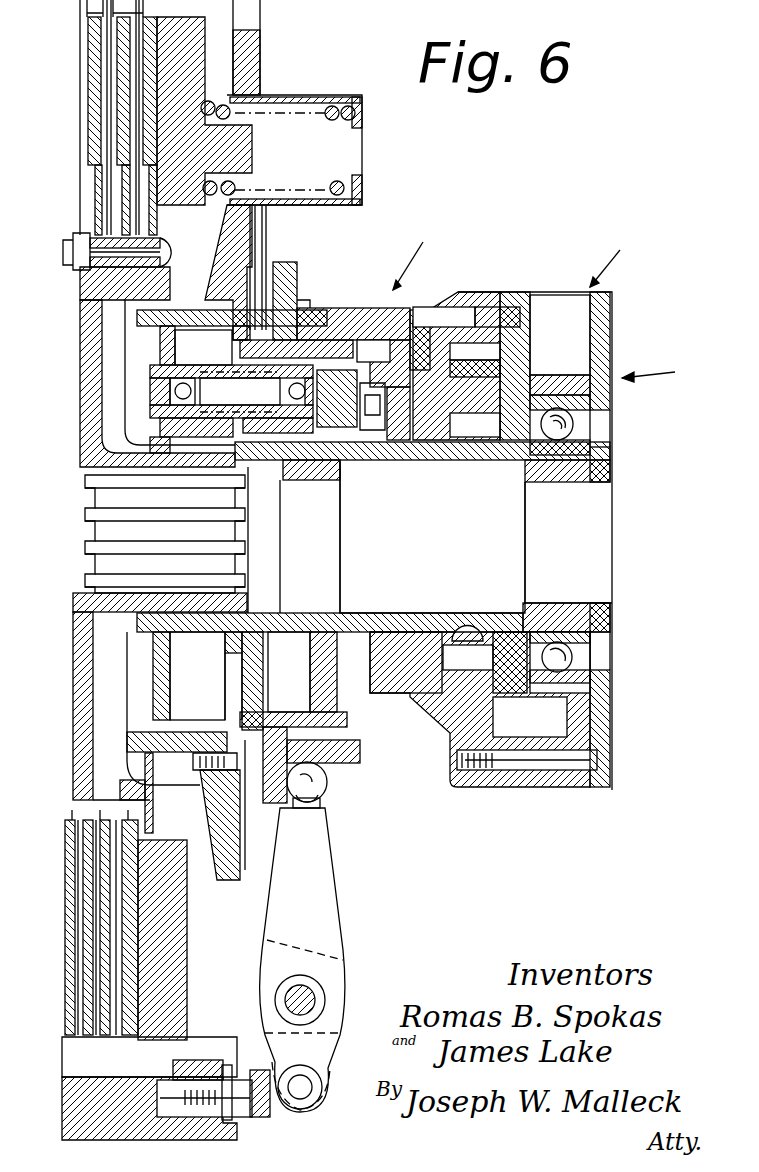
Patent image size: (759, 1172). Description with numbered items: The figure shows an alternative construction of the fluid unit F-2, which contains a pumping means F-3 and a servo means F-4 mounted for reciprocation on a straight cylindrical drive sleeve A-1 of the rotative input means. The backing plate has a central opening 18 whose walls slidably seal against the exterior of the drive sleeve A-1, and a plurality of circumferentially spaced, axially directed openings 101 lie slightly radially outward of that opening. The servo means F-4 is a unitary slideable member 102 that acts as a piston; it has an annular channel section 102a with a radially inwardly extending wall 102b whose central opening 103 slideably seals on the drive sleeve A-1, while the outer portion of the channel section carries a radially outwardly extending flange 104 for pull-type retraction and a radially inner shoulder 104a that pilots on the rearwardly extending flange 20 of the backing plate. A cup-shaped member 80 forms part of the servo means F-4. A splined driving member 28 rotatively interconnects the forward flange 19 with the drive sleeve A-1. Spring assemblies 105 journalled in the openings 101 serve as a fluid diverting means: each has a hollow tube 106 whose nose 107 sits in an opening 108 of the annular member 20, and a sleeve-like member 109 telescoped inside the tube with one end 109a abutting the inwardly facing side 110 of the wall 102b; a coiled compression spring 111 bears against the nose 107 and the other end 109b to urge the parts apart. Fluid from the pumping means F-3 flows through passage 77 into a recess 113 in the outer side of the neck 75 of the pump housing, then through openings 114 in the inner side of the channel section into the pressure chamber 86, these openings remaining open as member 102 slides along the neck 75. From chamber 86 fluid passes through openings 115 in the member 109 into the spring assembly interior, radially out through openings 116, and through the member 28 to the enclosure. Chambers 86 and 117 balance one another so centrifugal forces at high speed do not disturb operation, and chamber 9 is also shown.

The housing chamber 9 is at (568, 542).
The central opening 18 is at (205, 440).
The forward flange 19 is at (195, 300).
The rearwardly extending flange 20 is at (345, 340).
The splined driving member 28 is at (160, 345).
The neck of the pump housing 75 is at (452, 710).
The passage 77 is at (453, 610).
The cup-shaped member 80 is at (400, 298).
The pressure chamber 86 is at (294, 685).
The circumferentially spaced openings 101 is at (263, 300).
The unitary slideable member 102 is at (347, 307).
The annular channel section 102a is at (423, 297).
The radially inwardly extending wall 102b is at (355, 445).
The central opening 103 is at (355, 462).
The radially outwardly extending flange 104 is at (297, 265).
The radially inner shoulder 104a is at (300, 298).
The spring assemblies 105 is at (188, 455).
The hollow tube 106 is at (203, 347).
The nose 107 is at (150, 400).
The openings of the annular member 108 is at (165, 370).
The sleeve-like member 109 is at (293, 338).
The end of sleeve-like member 109a is at (373, 351).
The end of sleeve-like member 109b is at (231, 391).
The inwardly facing side 110 is at (294, 536).
The coiled compression spring 111 is at (125, 482).
The recess 113 is at (380, 613).
The openings 114 is at (410, 703).
The openings 115 is at (316, 484).
The openings 116 is at (150, 388).
The chamber 117 is at (205, 692).
The drive sleeve A-1 is at (492, 467).
The fluid unit F-2 is at (664, 379).
The pumping means F-3 is at (617, 257).
The servo means F-4 is at (414, 255).